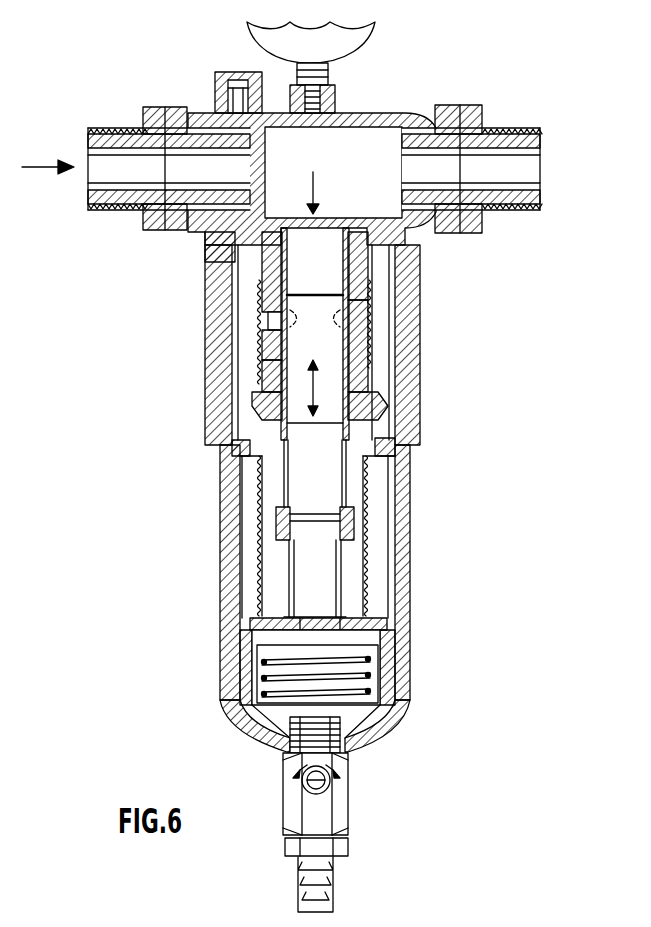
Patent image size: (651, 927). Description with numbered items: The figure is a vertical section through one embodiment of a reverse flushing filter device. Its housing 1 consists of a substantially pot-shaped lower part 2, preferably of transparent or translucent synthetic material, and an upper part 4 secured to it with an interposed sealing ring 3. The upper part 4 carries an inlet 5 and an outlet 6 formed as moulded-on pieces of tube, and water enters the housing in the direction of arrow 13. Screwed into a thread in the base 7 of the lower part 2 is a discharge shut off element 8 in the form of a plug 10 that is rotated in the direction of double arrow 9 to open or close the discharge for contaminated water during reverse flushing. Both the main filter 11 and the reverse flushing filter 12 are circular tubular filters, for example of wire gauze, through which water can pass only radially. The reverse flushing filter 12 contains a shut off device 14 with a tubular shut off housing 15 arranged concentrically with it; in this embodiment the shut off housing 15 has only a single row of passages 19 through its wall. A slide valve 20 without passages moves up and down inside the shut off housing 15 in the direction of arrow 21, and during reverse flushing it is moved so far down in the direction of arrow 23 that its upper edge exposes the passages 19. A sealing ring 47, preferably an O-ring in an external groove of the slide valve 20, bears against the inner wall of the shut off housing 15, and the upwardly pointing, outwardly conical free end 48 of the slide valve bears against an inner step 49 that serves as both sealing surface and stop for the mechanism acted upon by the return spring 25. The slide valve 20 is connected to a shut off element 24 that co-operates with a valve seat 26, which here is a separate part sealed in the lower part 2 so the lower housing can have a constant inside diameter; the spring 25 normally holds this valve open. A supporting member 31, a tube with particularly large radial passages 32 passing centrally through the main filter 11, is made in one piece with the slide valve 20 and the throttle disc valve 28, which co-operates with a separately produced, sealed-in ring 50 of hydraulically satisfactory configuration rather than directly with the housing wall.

The housing 1 is at (222, 456).
The lower part 2 is at (227, 555).
The sealing ring 3 is at (205, 252).
The upper part 4 is at (407, 115).
The inlet 5 is at (103, 183).
The outlet 6 is at (527, 160).
The base 7 is at (260, 725).
The discharge shut off element 8 is at (285, 812).
The double arrow 9 is at (338, 770).
The plug 10 is at (328, 795).
The main filter 11 is at (372, 557).
The reverse flushing filter 12 is at (373, 347).
The arrow 13 is at (33, 166).
The shut off device 14 is at (340, 290).
The shut off housing 15 is at (267, 360).
The passages 19 is at (268, 322).
The slide valve 20 is at (255, 396).
The arrow 21 is at (326, 388).
The arrow 23 is at (322, 187).
The shut off element 24 is at (383, 405).
The return spring 25 is at (262, 678).
The valve seat 26 is at (385, 440).
The throttle disc valve 28 is at (365, 622).
The supporting member 31 is at (330, 496).
The passages 32 is at (278, 490).
The sealing ring 47 is at (268, 337).
The free end 48 is at (255, 300).
The inner step 49 is at (370, 300).
The ring 50 is at (390, 647).